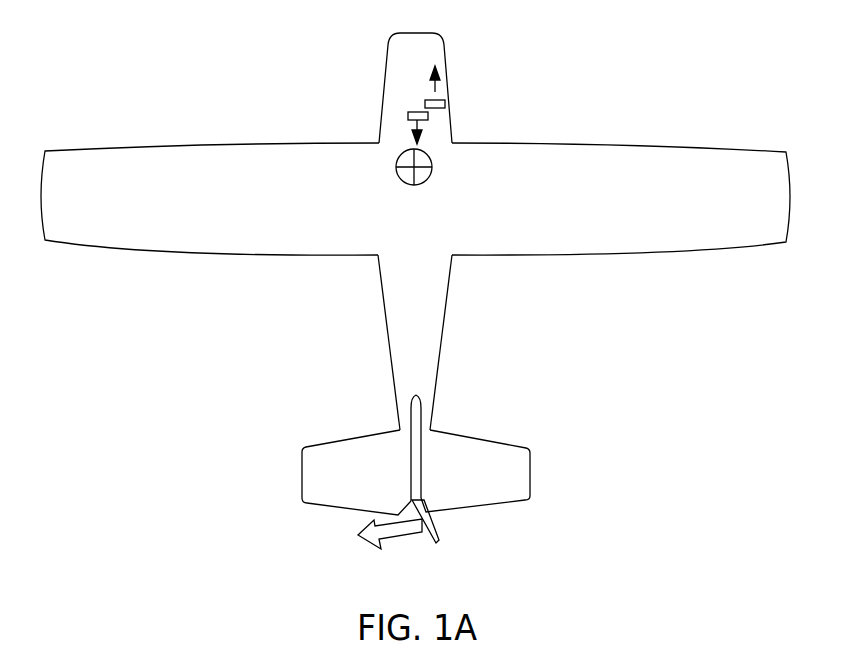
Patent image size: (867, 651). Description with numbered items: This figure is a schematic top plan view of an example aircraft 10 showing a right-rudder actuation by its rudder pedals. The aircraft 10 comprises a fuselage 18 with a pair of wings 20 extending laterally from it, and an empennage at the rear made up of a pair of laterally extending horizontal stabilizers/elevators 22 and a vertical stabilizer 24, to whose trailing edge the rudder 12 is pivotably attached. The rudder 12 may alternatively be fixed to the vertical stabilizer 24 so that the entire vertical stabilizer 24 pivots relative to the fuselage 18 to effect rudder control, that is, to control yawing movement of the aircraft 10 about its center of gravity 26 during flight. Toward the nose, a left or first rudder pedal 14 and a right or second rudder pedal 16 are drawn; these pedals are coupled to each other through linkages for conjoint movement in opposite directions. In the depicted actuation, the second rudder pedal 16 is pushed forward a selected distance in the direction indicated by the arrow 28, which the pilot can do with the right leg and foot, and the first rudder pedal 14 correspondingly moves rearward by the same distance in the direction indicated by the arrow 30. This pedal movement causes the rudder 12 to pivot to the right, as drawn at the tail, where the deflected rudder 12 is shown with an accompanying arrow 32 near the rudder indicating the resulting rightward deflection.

The aircraft 10 is at (190, 85).
The rudder 12 is at (433, 528).
The first rudder pedal 14 is at (408, 117).
The second rudder pedal 16 is at (447, 103).
The fuselage 18 is at (437, 310).
The wings 20 is at (603, 235).
The horizontal stabilizers/elevators 22 is at (512, 492).
The vertical stabilizer 24 is at (417, 478).
The center of gravity 26 is at (430, 158).
The arrow 28 is at (443, 79).
The arrow 30 is at (408, 122).
The rudder deflection arrow 32 is at (393, 543).